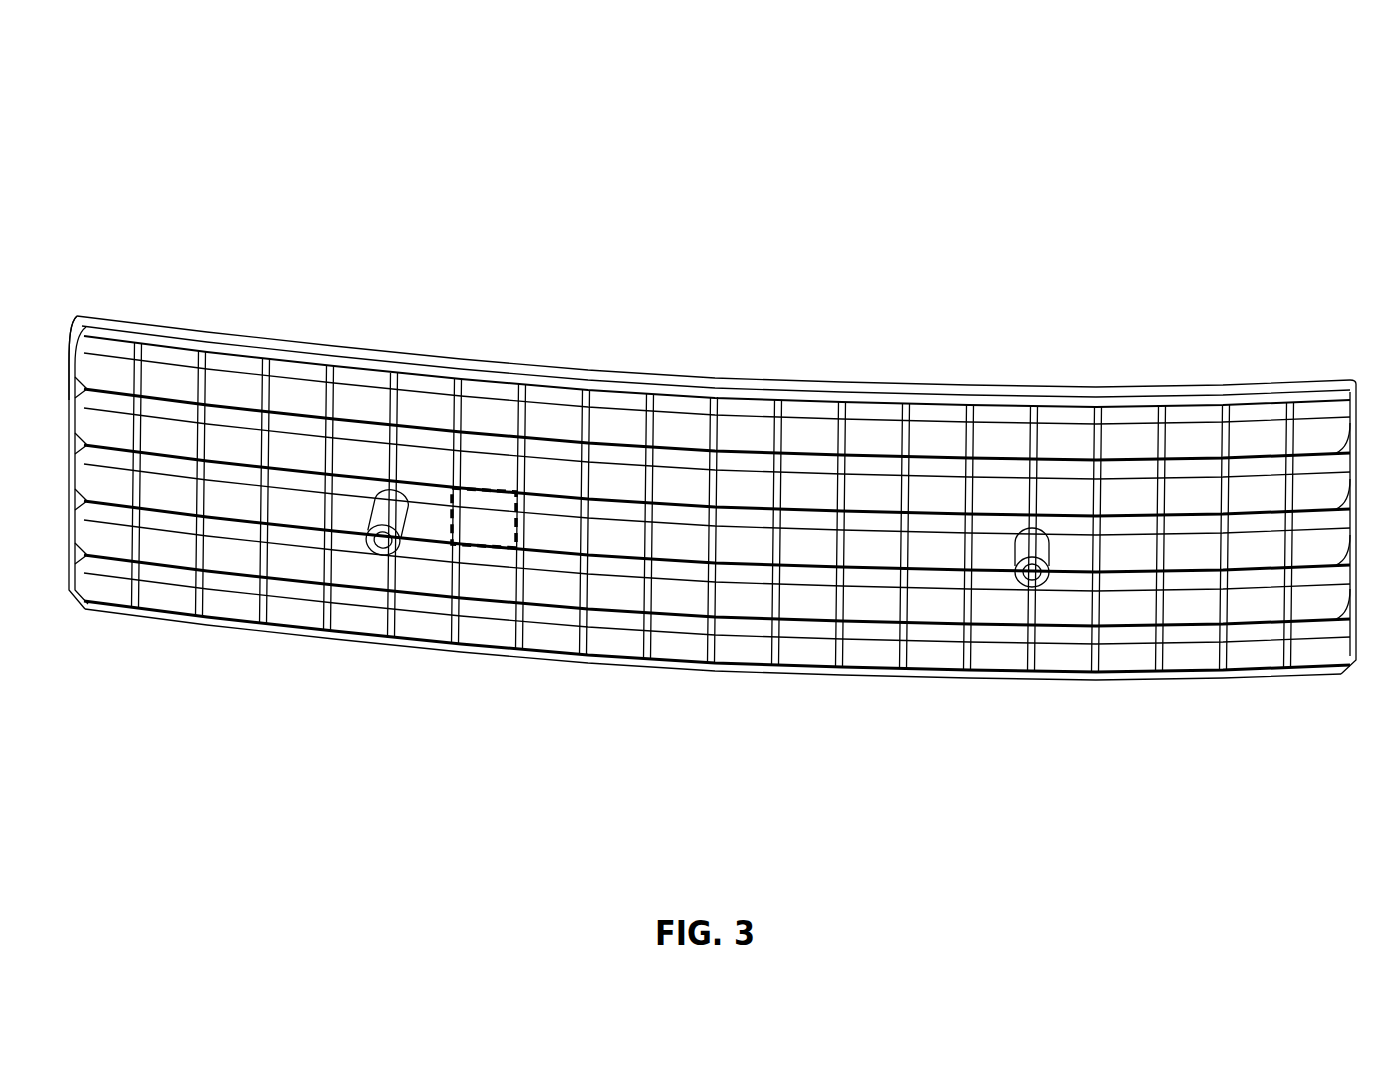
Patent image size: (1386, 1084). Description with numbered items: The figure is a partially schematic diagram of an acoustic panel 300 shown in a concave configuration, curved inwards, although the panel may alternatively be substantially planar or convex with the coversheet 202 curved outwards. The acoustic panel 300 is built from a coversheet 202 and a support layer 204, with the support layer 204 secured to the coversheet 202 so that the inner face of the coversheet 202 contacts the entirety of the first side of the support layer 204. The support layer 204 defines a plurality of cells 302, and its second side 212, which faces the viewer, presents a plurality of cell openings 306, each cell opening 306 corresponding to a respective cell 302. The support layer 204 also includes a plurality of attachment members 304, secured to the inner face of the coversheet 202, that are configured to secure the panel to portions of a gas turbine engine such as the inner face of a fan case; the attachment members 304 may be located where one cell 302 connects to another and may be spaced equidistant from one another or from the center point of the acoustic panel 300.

The acoustic panel 300 is at (153, 97).
The coversheet 202 is at (431, 342).
The support layer 204 is at (695, 381).
The second side of support layer 212 is at (72, 360).
The cell 302 is at (606, 661).
The attachment member 304 is at (381, 540).
The cell opening 306 is at (479, 574).